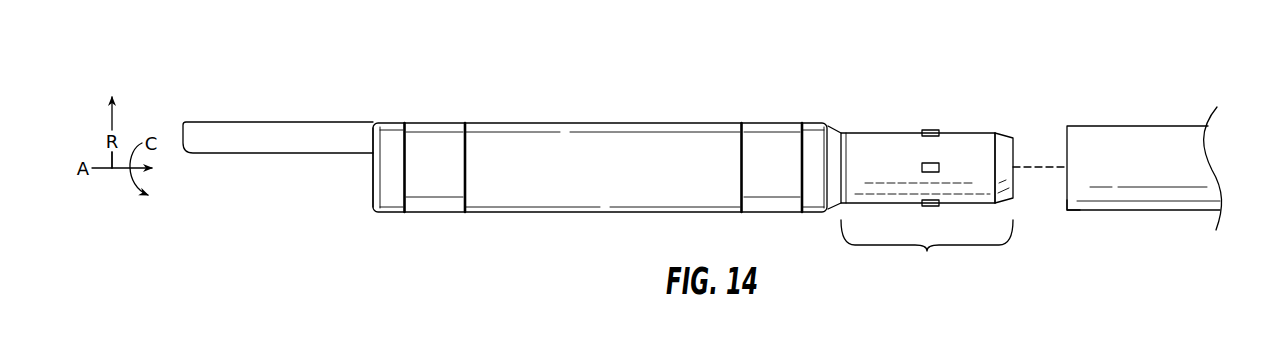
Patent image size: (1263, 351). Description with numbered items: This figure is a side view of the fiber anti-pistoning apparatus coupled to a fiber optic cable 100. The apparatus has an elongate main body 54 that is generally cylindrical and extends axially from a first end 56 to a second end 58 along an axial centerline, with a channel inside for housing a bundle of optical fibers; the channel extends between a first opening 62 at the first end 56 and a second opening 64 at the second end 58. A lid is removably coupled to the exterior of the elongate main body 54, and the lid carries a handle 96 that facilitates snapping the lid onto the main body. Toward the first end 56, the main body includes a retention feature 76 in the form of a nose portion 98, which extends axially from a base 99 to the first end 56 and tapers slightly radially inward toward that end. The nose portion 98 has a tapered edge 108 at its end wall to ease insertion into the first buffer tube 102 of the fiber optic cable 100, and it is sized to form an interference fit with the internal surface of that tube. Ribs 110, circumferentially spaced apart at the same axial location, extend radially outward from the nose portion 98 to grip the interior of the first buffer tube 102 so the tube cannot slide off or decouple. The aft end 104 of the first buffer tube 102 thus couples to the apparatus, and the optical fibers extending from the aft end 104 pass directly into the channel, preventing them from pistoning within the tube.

The elongate main body 54 is at (597, 190).
The first end 56 is at (1015, 140).
The second end 58 is at (370, 207).
The first opening 62 is at (1022, 195).
The second opening 64 is at (349, 179).
The retention feature 76 is at (933, 92).
The handle 96 is at (282, 130).
The nose portion 98 is at (927, 252).
The base 99 is at (842, 133).
The fiber optic cable 100 is at (1143, 86).
The first buffer tube 102 is at (1148, 205).
The aft end 104 is at (1062, 211).
The tapered edge 108 is at (1000, 133).
The ribs 110 is at (925, 130).